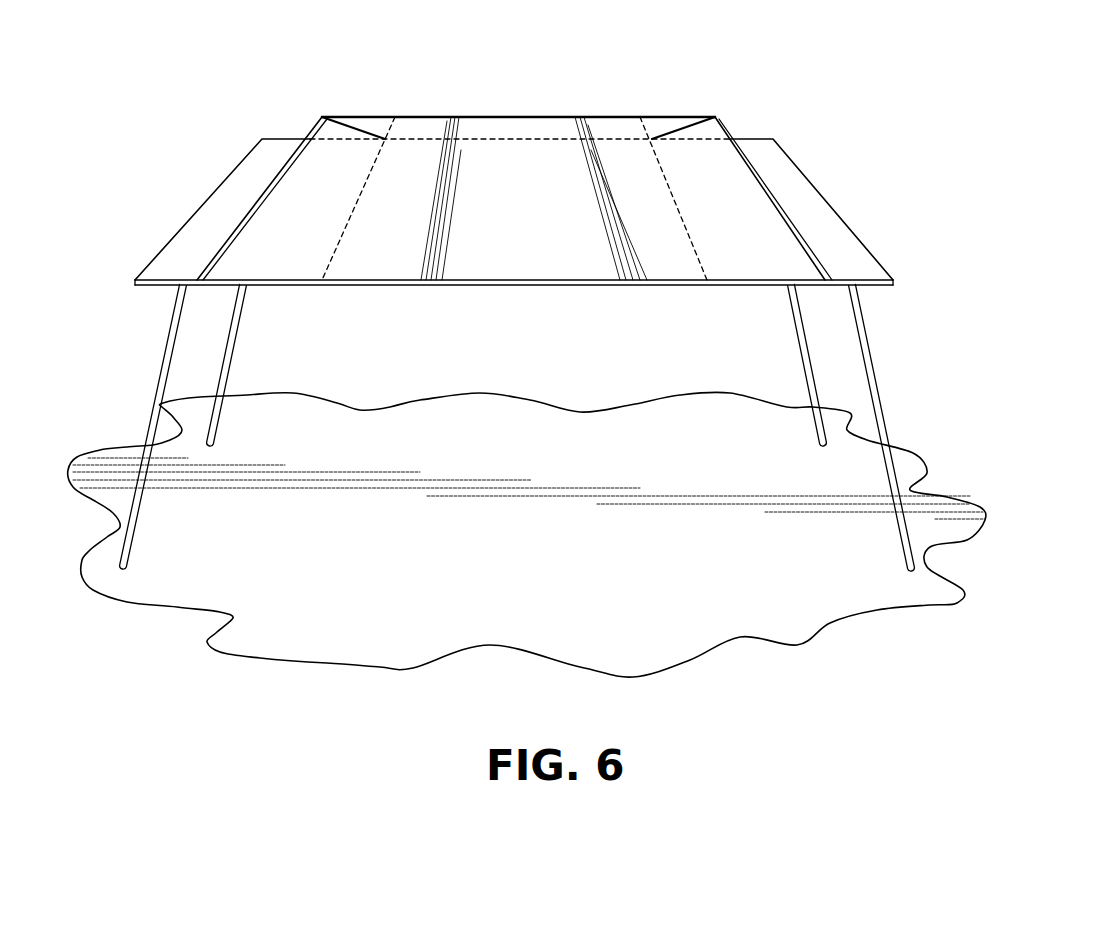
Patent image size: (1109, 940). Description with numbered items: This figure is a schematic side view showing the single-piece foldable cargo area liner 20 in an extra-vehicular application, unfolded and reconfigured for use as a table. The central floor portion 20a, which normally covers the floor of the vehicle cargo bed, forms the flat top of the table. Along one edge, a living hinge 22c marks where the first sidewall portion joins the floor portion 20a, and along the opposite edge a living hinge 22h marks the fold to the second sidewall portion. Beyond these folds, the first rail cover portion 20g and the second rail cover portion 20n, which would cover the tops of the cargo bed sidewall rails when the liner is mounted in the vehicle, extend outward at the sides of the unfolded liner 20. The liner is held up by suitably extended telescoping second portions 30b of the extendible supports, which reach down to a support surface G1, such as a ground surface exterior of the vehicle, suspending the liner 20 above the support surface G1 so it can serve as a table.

The foldable cargo area liner 20 is at (530, 167).
The floor portion 20a is at (480, 163).
The first rail cover portion 20g is at (222, 210).
The second rail cover portion 20n is at (813, 217).
The living hinge 22c is at (362, 190).
The living hinge 22h is at (670, 188).
The telescoping second portion 30b is at (167, 376).
The support surface G1 is at (544, 582).